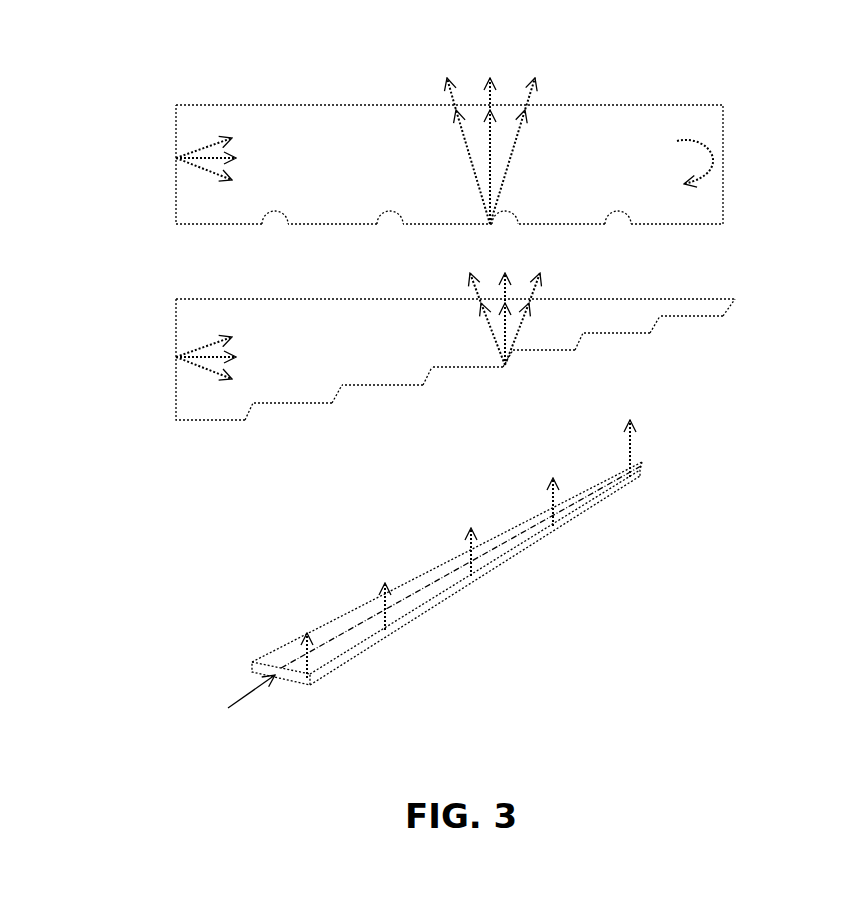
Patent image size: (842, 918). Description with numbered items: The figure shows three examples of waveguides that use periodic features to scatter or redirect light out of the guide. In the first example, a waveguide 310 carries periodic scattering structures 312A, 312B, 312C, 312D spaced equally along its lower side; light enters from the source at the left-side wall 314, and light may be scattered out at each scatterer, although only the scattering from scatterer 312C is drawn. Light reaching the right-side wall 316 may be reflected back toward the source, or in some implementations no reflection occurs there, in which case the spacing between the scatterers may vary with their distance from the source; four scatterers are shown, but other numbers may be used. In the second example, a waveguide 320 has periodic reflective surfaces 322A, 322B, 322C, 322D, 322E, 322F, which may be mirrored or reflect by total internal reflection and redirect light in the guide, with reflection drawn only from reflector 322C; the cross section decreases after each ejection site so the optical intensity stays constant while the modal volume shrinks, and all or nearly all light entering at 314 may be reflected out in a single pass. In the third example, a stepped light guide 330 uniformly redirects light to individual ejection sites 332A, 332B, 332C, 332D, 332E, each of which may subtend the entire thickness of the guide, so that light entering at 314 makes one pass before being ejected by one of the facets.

The waveguide with periodic scattering structures 310 is at (674, 105).
The scatterer 312A is at (275, 212).
The scatterer 312B is at (390, 212).
The scatterer 312C is at (505, 212).
The scatterer 312D is at (618, 212).
The source at the left-side wall 314 is at (176, 178).
The right-side wall 316 is at (724, 141).
The waveguide with periodic reflective surfaces 320 is at (704, 297).
The reflective surface 322A is at (250, 412).
The reflective surface 322B is at (338, 396).
The reflective surface 322C is at (430, 378).
The reflective surface 322D is at (507, 362).
The reflective surface 322E is at (580, 345).
The reflective surface 322F is at (655, 328).
The stepped light guide 330 is at (360, 604).
The ejection site 332A is at (314, 684).
The ejection site 332B is at (393, 634).
The ejection site 332C is at (480, 578).
The ejection site 332D is at (561, 524).
The ejection site 332E is at (645, 477).